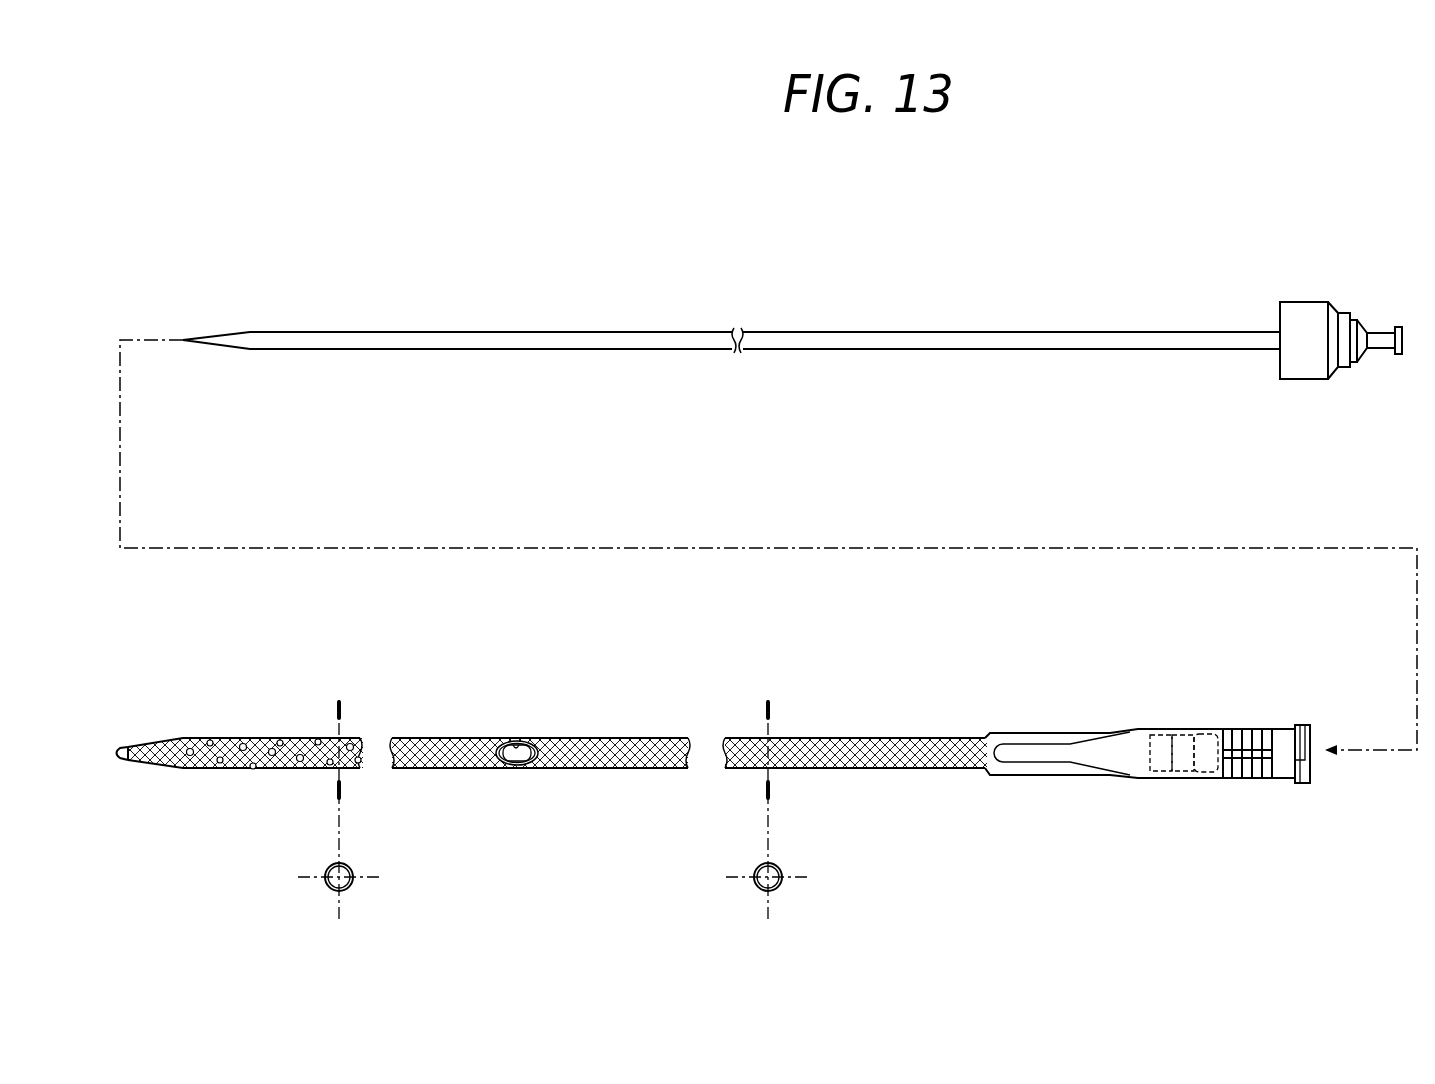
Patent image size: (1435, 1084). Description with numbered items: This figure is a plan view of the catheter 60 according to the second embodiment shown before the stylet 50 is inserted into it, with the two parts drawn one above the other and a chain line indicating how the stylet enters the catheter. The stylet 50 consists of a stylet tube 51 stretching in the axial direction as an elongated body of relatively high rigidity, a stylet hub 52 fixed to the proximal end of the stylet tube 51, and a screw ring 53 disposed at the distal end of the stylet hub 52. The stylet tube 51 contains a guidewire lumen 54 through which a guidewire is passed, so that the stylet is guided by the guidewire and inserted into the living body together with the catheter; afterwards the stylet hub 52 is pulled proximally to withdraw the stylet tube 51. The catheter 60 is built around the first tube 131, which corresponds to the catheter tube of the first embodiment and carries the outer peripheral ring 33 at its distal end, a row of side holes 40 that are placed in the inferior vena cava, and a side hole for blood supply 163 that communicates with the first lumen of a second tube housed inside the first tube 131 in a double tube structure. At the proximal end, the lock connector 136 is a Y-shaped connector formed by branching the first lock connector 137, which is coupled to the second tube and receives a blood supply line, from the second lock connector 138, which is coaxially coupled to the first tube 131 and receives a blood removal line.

The stylet 50 is at (1160, 300).
The stylet tube 51 is at (828, 331).
The stylet hub 52 is at (1388, 350).
The screw ring 53 is at (1305, 378).
The guidewire lumen 54 is at (900, 345).
The catheter 60 is at (1086, 690).
The outer peripheral ring 33 is at (127, 747).
The side holes 40 is at (244, 752).
The first tube 131 is at (567, 770).
The side hole for blood supply 163 is at (508, 741).
The lock connector 136 is at (1058, 842).
The first lock connector 137 is at (1208, 779).
The second lock connector 138 is at (1083, 777).